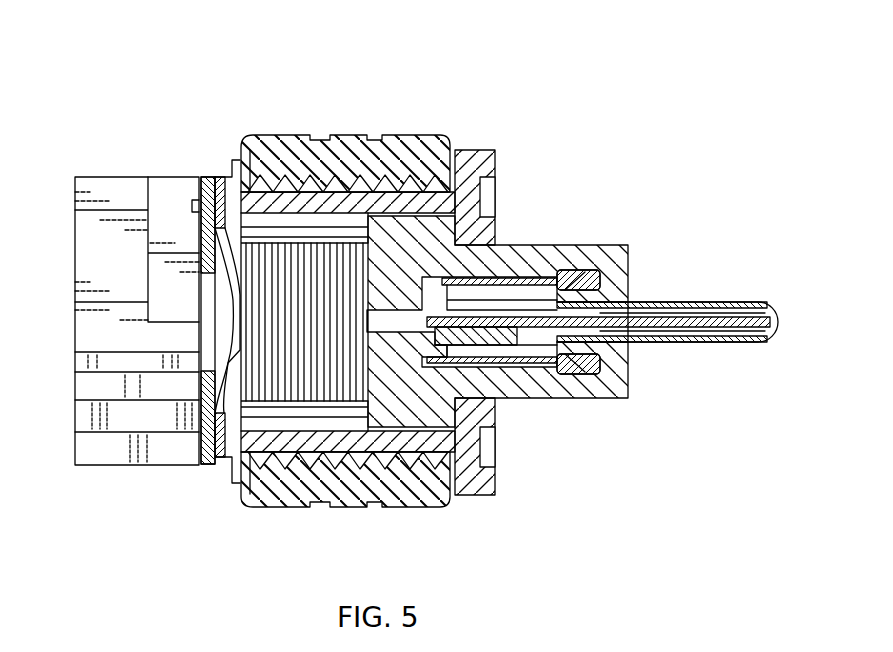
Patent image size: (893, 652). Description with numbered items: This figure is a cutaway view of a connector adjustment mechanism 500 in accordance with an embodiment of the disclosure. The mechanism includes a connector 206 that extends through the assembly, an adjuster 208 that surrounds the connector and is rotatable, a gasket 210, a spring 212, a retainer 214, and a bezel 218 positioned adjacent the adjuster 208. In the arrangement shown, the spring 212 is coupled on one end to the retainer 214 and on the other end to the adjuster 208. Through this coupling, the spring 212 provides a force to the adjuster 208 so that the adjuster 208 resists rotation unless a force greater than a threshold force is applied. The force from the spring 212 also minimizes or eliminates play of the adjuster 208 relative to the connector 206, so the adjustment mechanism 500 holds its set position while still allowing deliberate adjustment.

The connector assembly 500 is at (142, 64).
The connector 206 is at (552, 245).
The adjuster 208 is at (455, 509).
The gasket 210 is at (248, 484).
The spring 212 is at (217, 176).
The retainer 214 is at (208, 467).
The bezel 218 is at (497, 480).